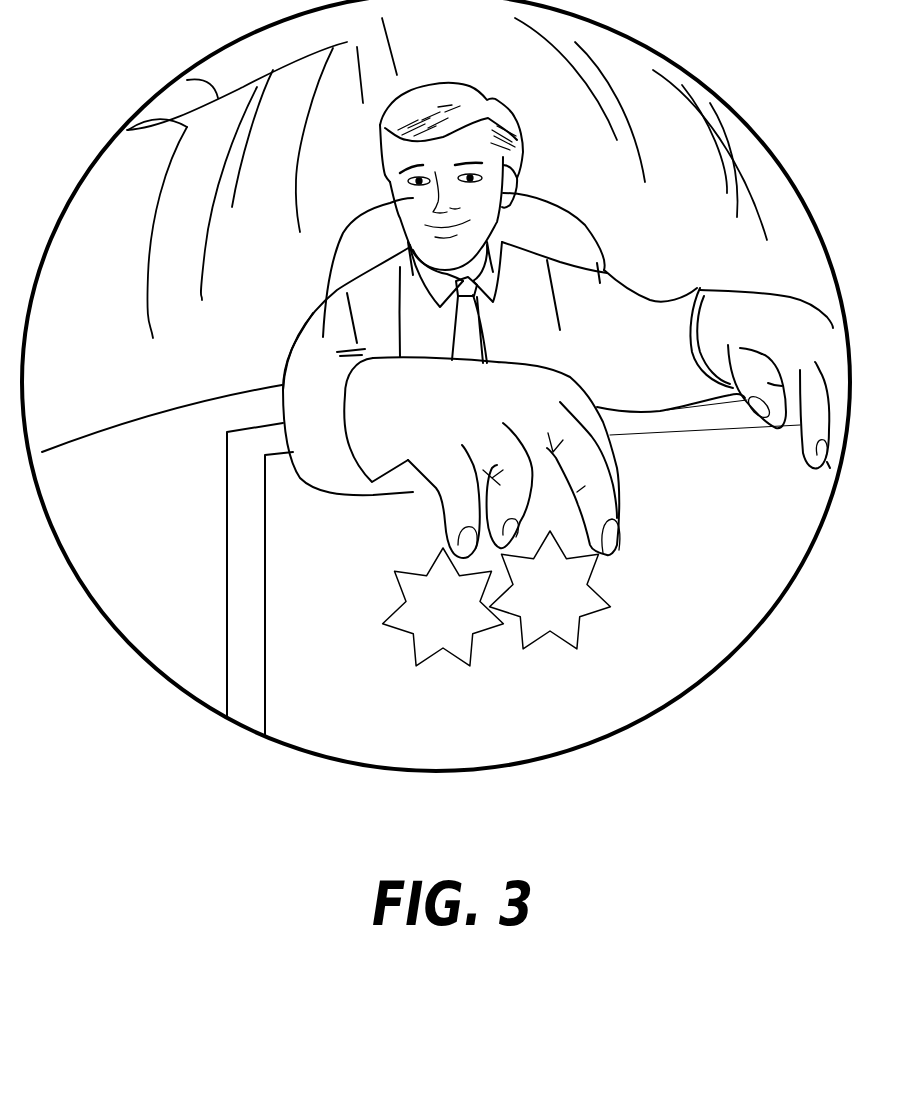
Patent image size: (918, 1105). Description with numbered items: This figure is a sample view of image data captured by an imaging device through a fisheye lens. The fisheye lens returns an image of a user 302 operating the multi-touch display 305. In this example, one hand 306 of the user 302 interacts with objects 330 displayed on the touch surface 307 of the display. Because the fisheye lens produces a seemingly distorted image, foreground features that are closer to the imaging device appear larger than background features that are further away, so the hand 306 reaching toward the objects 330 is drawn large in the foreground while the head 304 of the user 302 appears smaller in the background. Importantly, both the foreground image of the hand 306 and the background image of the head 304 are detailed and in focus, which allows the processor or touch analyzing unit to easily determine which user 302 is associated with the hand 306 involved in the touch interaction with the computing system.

The user 302 is at (537, 320).
The head 304 is at (517, 128).
The multi-touch display 305 is at (227, 580).
The hand 306 is at (622, 463).
The touch surface 307 is at (358, 677).
The objects 330 is at (490, 653).